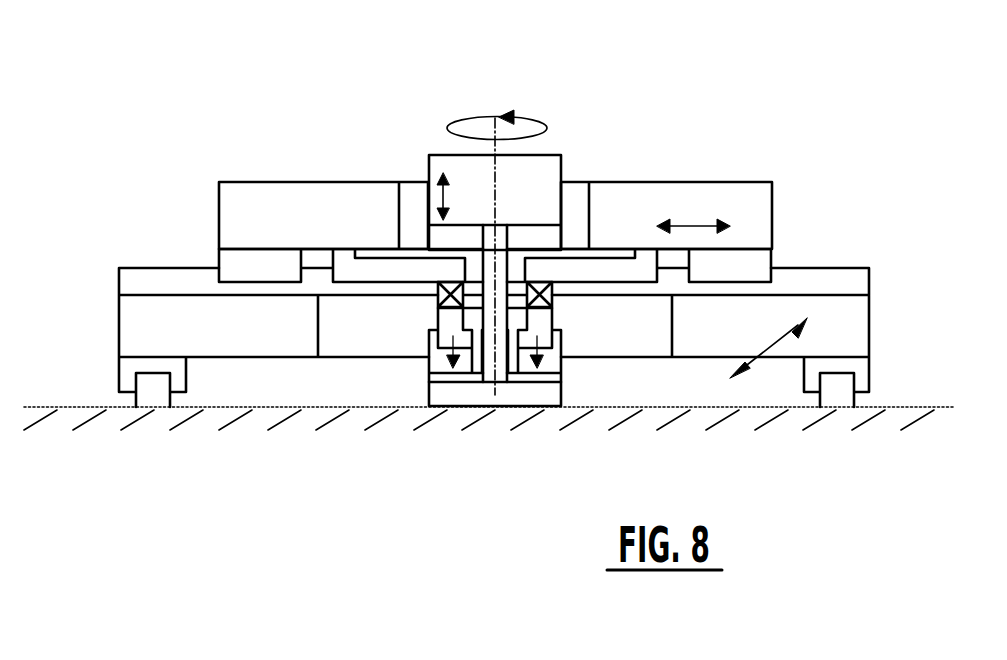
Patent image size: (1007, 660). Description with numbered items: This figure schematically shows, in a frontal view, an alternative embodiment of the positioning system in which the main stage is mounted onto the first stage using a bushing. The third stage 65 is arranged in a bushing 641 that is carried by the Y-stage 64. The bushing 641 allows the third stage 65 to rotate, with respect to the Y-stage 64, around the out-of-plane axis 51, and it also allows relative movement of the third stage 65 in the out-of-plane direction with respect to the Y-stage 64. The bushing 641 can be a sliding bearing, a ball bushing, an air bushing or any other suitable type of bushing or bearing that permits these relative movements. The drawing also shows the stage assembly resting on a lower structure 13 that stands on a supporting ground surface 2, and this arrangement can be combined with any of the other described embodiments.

The ground / support surface 2 is at (920, 407).
The base body / carriage 13 is at (863, 320).
The out-of-plane axis 51 is at (493, 128).
The Y-stage 64 is at (768, 208).
The bushing 641 is at (415, 208).
The third stage 65 is at (553, 158).